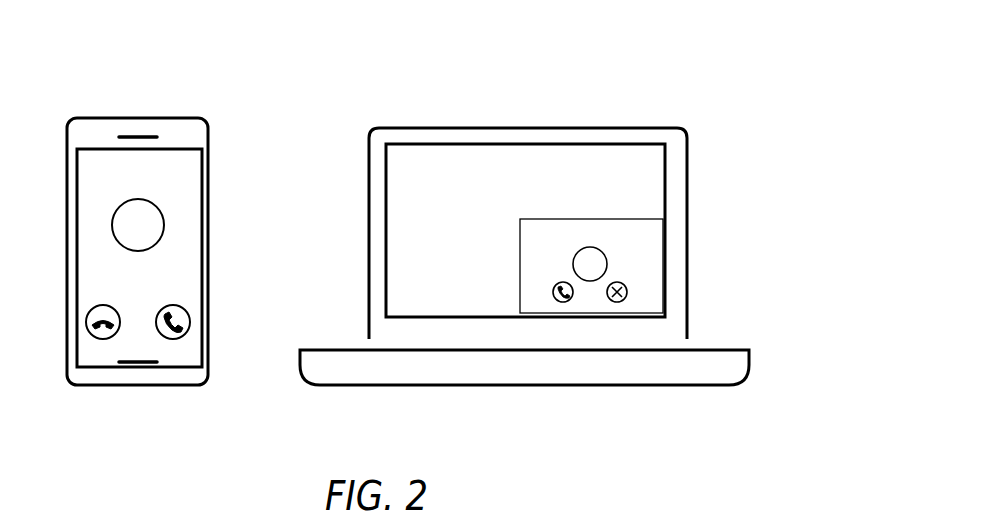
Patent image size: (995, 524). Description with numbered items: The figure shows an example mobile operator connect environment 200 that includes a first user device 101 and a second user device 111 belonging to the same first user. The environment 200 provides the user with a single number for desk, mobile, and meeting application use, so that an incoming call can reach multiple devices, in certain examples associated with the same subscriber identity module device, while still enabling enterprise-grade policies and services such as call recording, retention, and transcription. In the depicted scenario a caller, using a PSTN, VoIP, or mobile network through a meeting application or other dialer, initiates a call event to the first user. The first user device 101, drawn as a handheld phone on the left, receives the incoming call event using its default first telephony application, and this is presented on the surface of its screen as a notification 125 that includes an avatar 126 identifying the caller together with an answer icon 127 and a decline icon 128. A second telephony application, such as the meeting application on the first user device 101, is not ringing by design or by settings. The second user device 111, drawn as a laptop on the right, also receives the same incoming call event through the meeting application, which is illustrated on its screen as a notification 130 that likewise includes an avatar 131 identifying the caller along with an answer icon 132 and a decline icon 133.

The mobile operator connect environment 200 is at (647, 56).
The first user device 101 is at (210, 171).
The notification 125 is at (200, 222).
The avatar 126 is at (160, 238).
The answer icon 127 is at (190, 322).
The decline icon 128 is at (86, 322).
The second user device 111 is at (689, 155).
The notification 130 is at (662, 249).
The avatar 131 is at (607, 266).
The answer icon 132 is at (553, 293).
The decline icon 133 is at (628, 292).